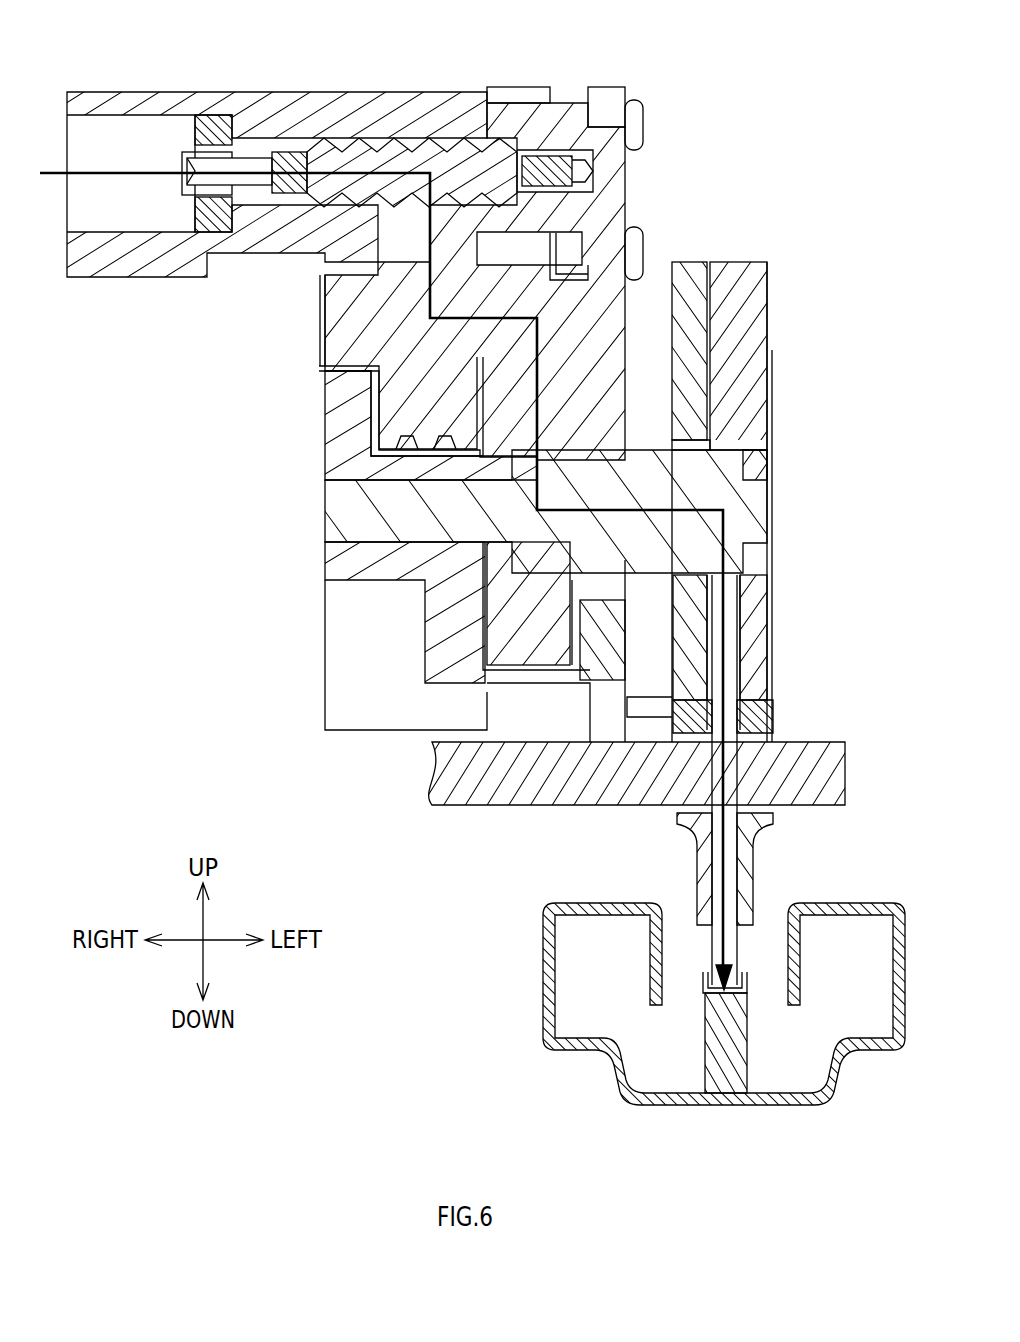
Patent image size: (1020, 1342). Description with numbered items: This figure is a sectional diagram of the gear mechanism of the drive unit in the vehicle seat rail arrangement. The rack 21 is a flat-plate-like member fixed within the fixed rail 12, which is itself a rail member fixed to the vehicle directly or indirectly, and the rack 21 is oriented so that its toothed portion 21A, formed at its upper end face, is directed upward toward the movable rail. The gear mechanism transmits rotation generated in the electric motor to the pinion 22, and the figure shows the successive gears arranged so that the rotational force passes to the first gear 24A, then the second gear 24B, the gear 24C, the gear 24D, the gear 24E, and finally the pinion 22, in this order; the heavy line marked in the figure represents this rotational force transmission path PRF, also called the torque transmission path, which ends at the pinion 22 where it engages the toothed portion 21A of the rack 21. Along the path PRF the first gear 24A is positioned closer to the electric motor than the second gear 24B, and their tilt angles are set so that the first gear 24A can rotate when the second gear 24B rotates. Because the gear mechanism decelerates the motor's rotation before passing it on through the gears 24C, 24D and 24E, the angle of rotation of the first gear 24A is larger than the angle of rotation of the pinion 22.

The first gear 24A is at (372, 145).
The second gear 24B is at (455, 218).
The gear 24C is at (540, 272).
The gear 24D is at (552, 383).
The gear 24E is at (722, 462).
The rotational force transmission path PRF is at (723, 547).
The pinion 22 is at (730, 658).
The fixed rail 12 is at (855, 903).
The toothed portion 21A is at (748, 983).
The rack 21 is at (748, 1035).